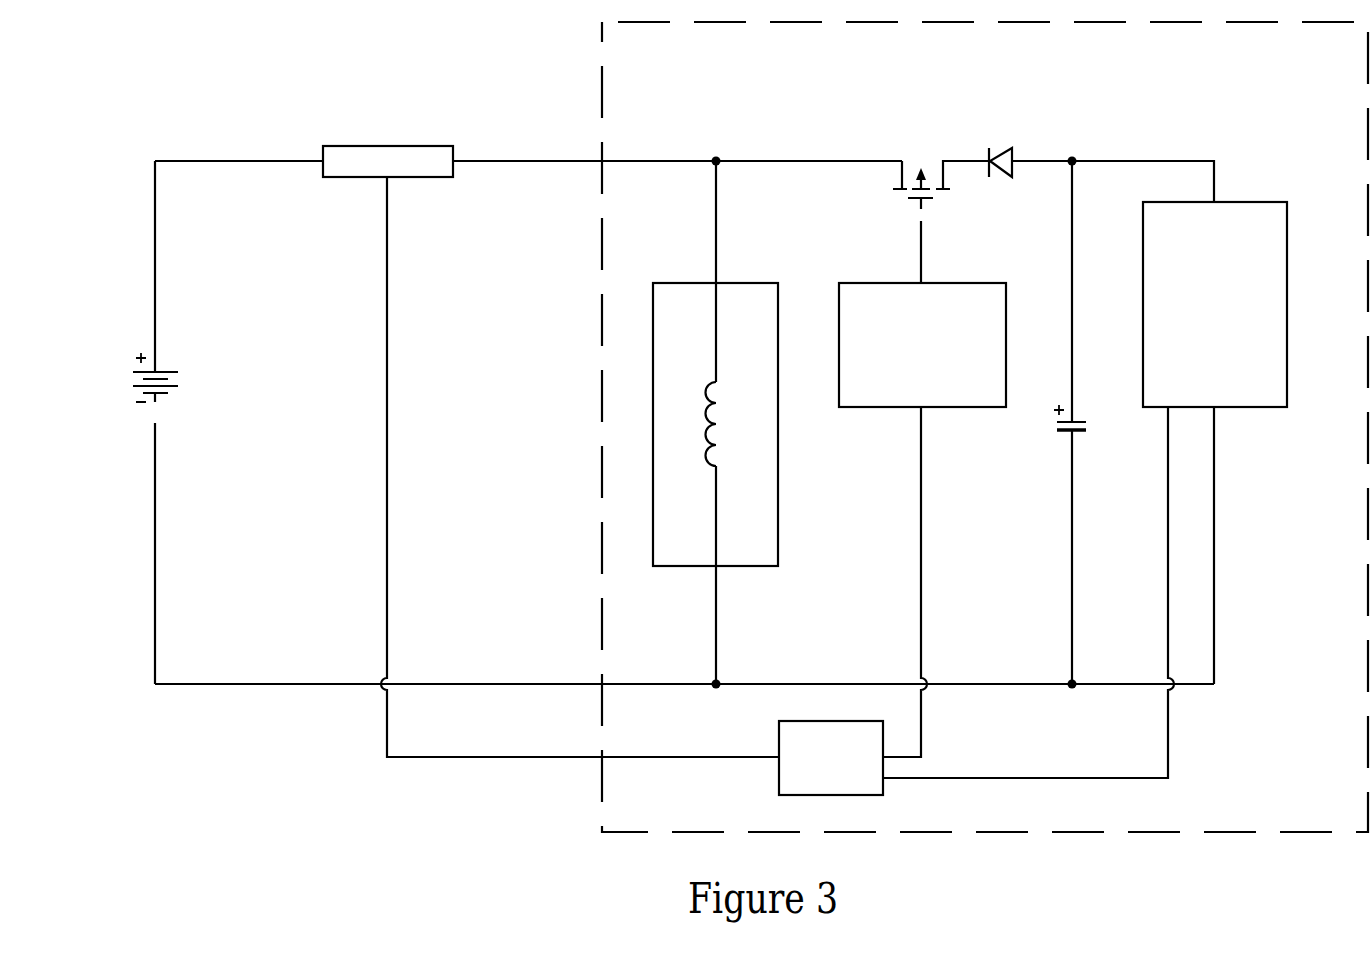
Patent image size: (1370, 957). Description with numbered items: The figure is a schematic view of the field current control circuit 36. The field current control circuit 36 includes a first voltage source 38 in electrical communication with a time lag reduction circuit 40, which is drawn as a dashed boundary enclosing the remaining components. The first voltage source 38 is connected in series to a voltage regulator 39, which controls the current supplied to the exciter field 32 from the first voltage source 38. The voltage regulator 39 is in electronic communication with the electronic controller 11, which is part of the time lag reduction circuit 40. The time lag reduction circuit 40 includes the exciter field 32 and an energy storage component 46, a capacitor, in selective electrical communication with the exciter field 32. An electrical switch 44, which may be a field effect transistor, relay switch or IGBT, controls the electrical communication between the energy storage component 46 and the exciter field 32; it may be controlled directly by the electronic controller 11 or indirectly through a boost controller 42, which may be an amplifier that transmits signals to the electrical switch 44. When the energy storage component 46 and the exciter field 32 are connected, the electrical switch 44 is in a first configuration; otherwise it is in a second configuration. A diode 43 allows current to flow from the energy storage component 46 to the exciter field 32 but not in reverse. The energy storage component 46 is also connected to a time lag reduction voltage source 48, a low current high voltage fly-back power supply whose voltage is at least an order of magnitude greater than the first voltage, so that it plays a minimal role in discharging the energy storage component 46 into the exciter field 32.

The field current control circuit 36 is at (110, 130).
The first voltage source 38 is at (110, 400).
The voltage regulator 39 is at (390, 148).
The time lag reduction circuit 40 is at (1298, 840).
The exciter field 32 is at (716, 513).
The boost controller 42 is at (866, 394).
The electrical switch 44 is at (921, 150).
The diode 43 is at (1001, 152).
The energy storage component 46 is at (1059, 424).
The time lag reduction voltage source 48 is at (1287, 301).
The electronic controller 11 is at (779, 778).